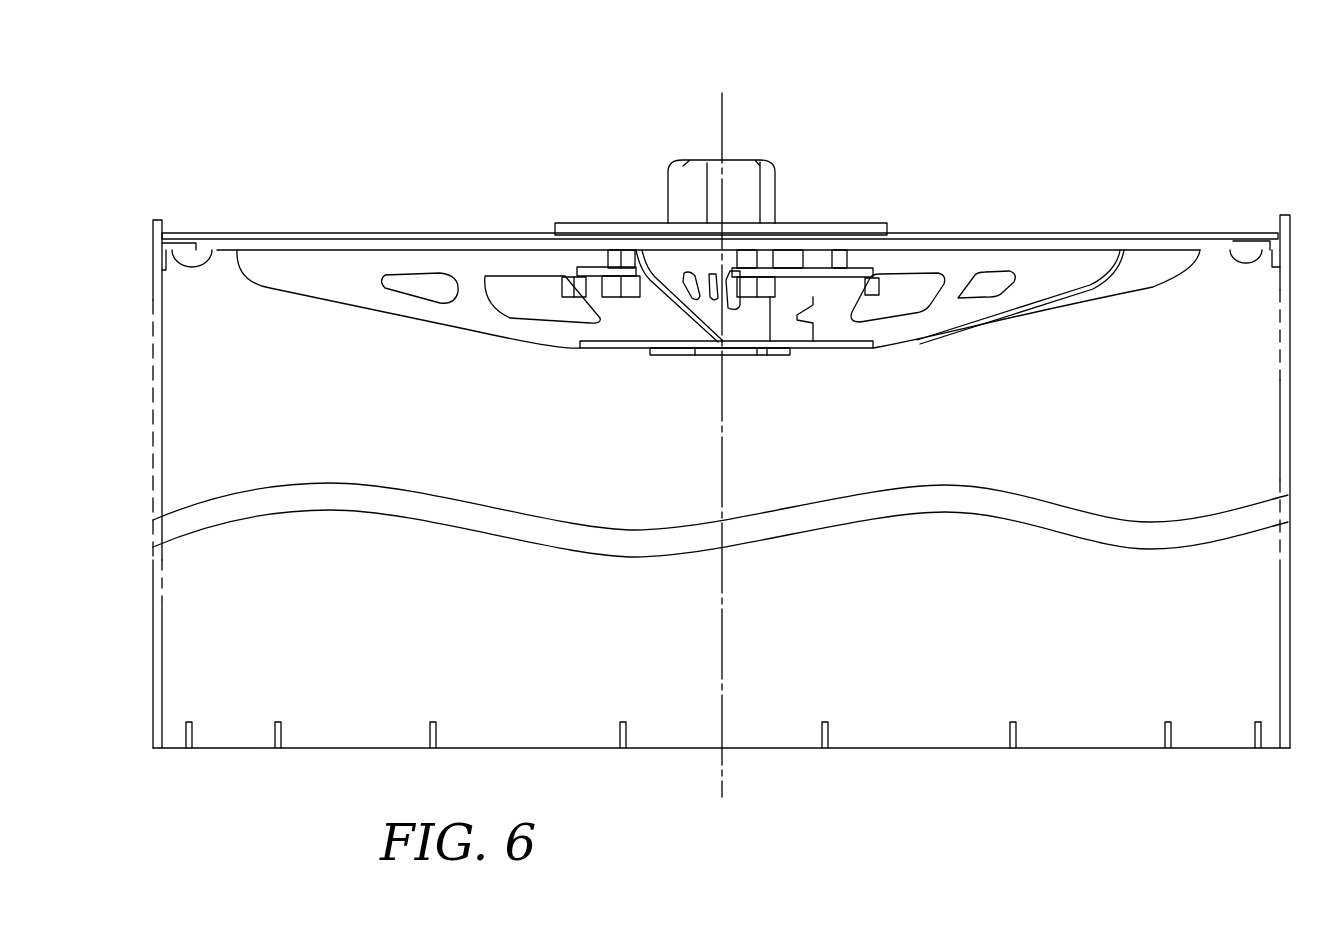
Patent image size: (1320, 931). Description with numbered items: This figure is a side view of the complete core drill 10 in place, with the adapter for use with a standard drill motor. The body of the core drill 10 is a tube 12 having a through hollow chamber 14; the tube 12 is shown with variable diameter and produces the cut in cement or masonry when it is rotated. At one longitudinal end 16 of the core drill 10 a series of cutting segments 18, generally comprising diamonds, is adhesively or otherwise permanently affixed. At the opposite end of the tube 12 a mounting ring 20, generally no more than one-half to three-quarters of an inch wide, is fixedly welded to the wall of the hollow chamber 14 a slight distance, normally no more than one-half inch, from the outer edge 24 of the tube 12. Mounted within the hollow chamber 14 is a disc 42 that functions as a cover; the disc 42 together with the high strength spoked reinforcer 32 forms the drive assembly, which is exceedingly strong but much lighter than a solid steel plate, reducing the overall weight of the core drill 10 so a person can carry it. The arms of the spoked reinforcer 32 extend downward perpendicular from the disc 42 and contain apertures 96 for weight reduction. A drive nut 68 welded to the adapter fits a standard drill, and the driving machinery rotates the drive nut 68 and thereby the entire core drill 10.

The core drill 10 is at (423, 163).
The tube 12 is at (1278, 413).
The hollow chamber 14 is at (1127, 700).
The longitudinal end 16 is at (1283, 749).
The cutting segments 18 is at (1203, 746).
The mounting ring 20 is at (220, 243).
The outer edge 24 is at (1293, 238).
The high strength spoked reinforcer 32 is at (298, 292).
The disc 42 is at (322, 233).
The drive nut 68 is at (672, 190).
The apertures 96 is at (520, 300).